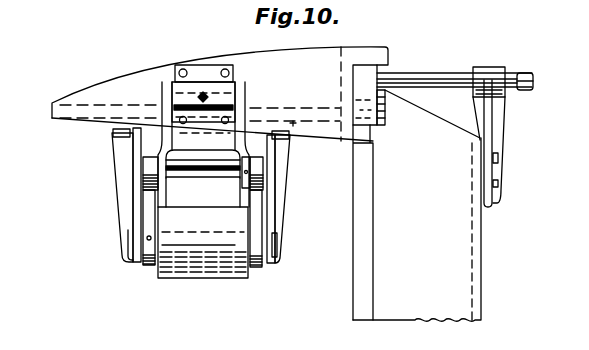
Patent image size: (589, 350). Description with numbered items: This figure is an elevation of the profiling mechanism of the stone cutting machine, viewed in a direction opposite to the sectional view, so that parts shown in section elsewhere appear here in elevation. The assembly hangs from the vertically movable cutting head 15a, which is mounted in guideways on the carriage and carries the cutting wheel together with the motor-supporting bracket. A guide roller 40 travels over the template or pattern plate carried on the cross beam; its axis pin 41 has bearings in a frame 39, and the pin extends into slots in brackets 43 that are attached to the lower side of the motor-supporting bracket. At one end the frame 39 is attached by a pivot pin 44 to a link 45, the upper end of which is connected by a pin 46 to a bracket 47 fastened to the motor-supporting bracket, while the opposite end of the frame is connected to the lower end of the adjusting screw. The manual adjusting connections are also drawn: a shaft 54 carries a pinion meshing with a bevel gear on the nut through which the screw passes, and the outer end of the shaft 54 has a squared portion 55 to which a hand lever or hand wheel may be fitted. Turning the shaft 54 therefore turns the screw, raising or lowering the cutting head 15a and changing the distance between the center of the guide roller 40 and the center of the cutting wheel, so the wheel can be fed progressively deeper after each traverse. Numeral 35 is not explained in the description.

The cutting head 15a is at (463, 252).
The wing section body 35 is at (62, 106).
The frame 39 is at (252, 267).
The roller 40 is at (195, 280).
The axis pin 41 is at (130, 245).
The brackets 43 is at (118, 153).
The pivot pin 44 is at (192, 173).
The link 45 is at (243, 116).
The pin 46 is at (162, 96).
The bracket 47 is at (200, 72).
The shaft 54 is at (428, 72).
The squared portion 55 is at (529, 74).